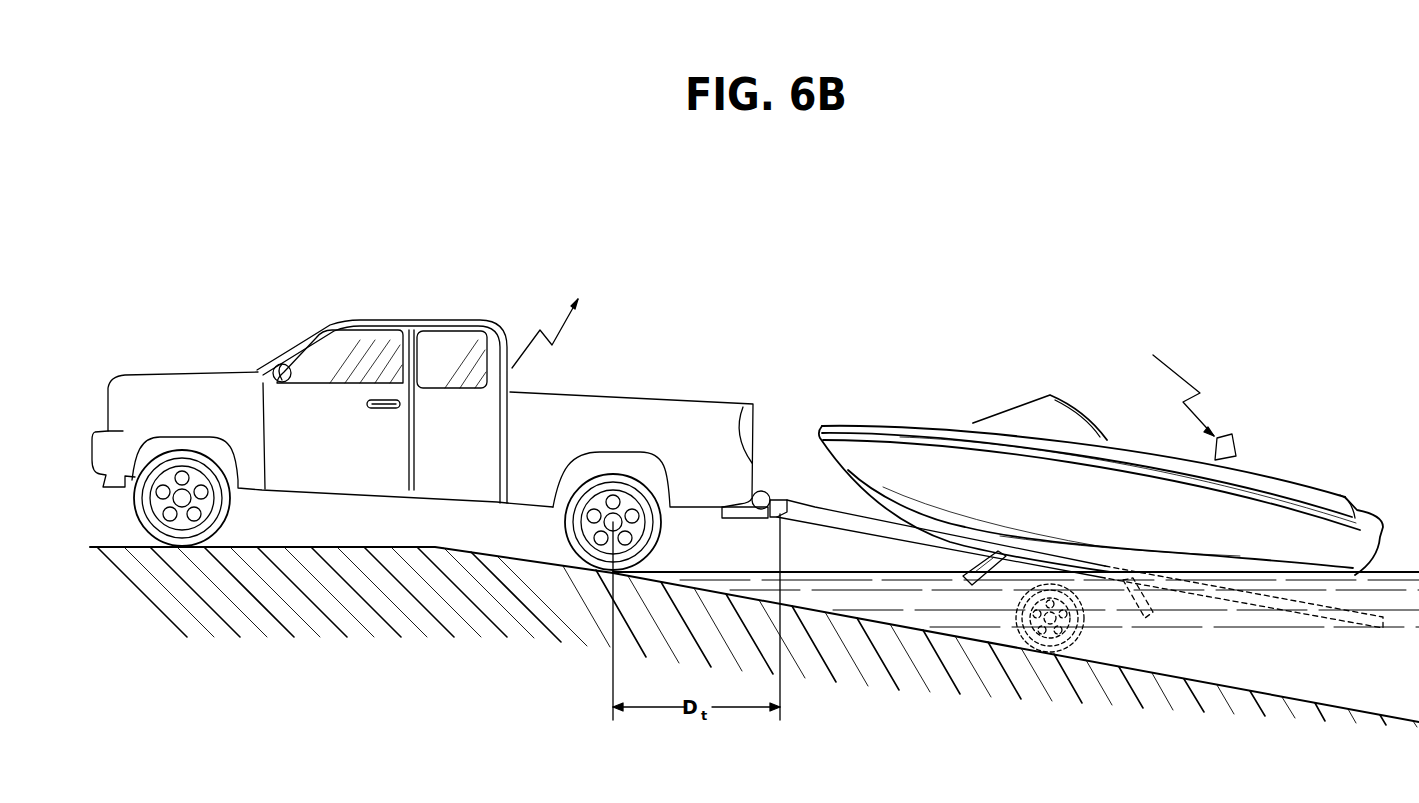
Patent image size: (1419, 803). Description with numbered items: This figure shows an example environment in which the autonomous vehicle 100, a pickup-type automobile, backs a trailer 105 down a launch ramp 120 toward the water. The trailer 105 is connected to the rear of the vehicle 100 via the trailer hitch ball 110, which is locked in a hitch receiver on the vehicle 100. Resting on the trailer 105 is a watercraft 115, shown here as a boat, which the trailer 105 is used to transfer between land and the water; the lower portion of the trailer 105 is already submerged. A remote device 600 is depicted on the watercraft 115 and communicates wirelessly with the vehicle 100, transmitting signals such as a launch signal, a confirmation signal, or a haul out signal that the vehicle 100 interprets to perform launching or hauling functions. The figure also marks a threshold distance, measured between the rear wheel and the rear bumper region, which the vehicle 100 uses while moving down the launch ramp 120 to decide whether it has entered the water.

The autonomous vehicle 100 is at (371, 322).
The trailer 105 is at (840, 518).
The trailer hitch ball 110 is at (766, 495).
The watercraft 115 is at (1303, 483).
The launch ramp 120 is at (450, 548).
The remote device 600 is at (1225, 437).